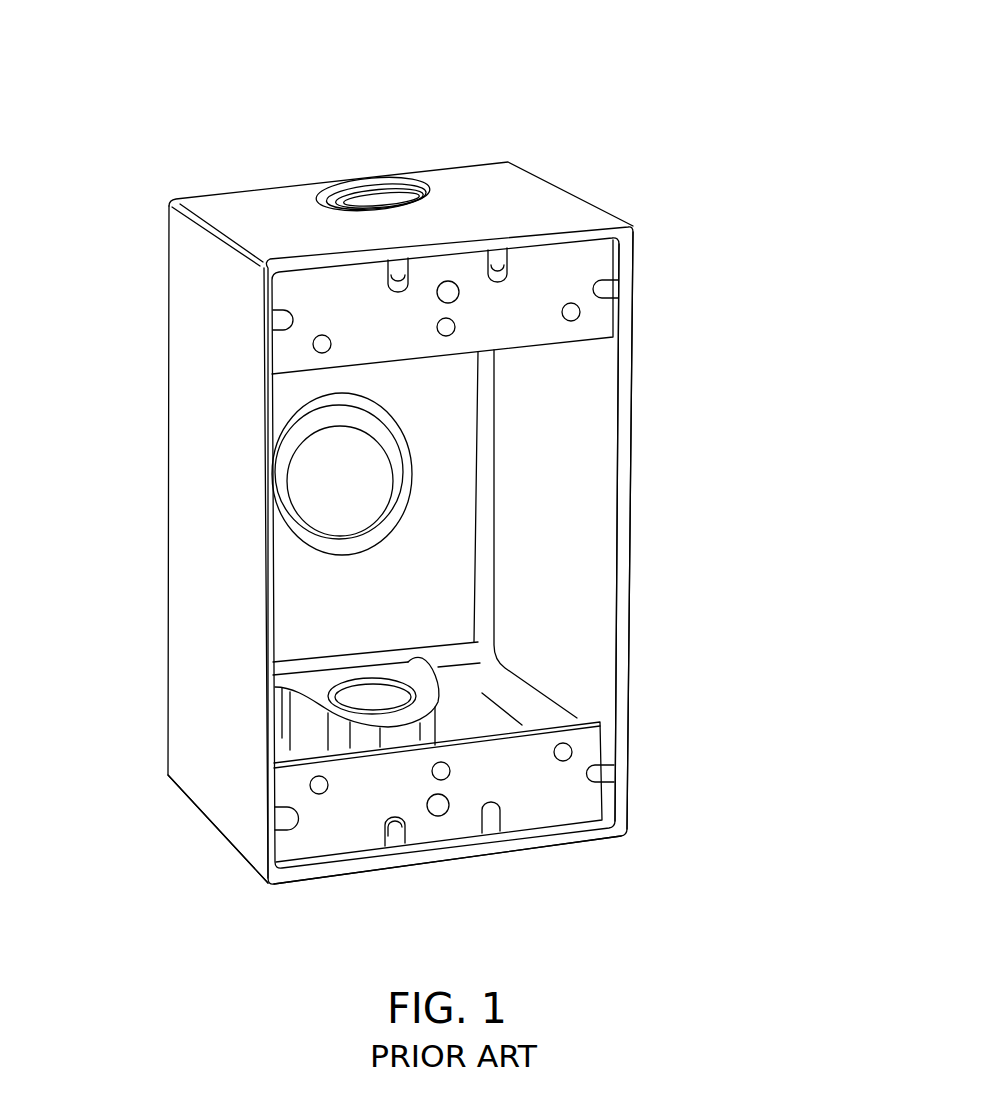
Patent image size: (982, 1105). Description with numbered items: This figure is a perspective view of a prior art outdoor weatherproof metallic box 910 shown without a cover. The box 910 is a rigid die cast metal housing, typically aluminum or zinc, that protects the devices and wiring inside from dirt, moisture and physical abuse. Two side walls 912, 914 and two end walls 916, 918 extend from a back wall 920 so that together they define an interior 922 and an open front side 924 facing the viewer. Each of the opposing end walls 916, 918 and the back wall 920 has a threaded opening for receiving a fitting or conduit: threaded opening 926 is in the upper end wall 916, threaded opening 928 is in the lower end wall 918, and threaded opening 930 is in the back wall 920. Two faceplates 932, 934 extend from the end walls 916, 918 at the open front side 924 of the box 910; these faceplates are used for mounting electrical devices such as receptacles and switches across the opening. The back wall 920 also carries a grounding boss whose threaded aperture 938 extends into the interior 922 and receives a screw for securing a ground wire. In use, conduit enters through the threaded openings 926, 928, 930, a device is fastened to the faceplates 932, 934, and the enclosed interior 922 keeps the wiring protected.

The metallic box 910 is at (548, 128).
The side wall 912 is at (208, 488).
The side wall 914 is at (628, 535).
The end wall 916 is at (252, 228).
The end wall 918 is at (308, 880).
The back wall 920 is at (613, 367).
The interior 922 is at (270, 620).
The open front side 924 is at (613, 649).
The threaded opening 926 is at (363, 192).
The threaded opening 928 is at (363, 699).
The threaded opening 930 is at (353, 485).
The faceplate 932 is at (572, 267).
The faceplate 934 is at (543, 797).
The threaded aperture 938 is at (550, 497).